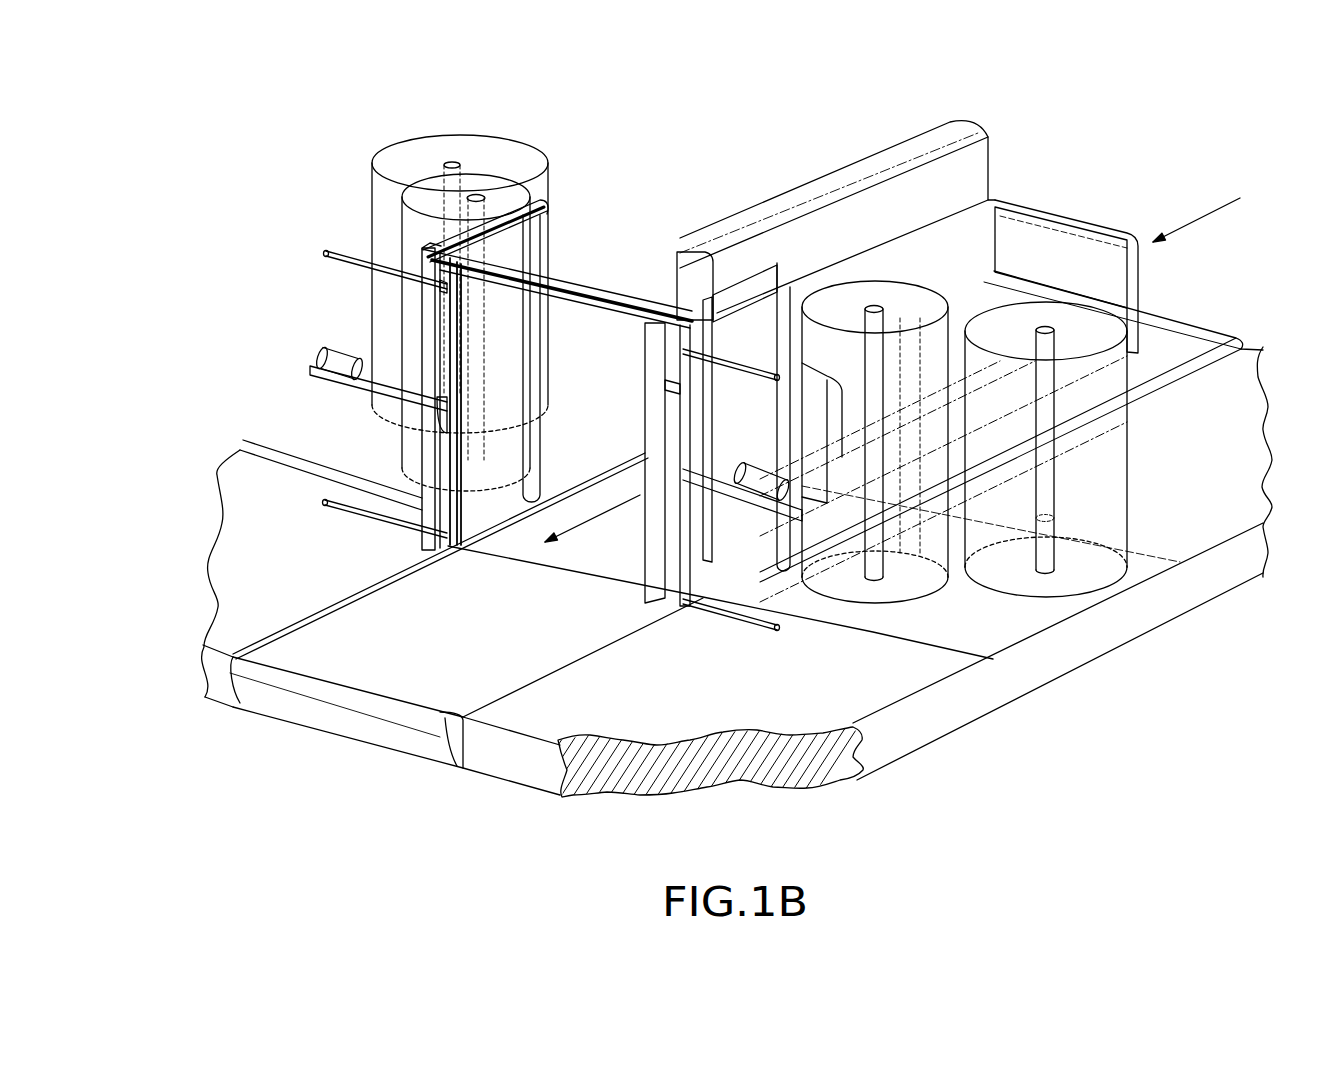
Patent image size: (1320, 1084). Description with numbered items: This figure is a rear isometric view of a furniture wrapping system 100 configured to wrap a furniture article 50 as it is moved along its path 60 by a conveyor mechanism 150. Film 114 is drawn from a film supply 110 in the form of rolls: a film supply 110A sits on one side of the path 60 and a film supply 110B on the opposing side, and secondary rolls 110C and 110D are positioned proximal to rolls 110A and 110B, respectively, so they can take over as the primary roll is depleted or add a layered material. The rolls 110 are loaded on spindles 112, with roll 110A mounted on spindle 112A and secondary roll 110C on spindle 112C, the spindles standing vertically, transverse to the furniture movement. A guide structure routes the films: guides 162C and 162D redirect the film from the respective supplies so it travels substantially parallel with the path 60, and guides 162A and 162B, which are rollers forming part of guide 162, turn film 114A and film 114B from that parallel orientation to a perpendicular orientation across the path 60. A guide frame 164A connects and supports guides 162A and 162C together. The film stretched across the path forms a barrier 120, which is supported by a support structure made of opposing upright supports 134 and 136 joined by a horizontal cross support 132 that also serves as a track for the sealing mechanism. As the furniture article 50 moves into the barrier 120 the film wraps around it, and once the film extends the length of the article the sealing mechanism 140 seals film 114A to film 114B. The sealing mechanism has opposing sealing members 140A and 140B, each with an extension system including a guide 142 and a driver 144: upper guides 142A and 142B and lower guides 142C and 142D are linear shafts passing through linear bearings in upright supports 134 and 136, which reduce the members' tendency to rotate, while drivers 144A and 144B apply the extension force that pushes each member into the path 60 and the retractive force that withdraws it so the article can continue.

The furniture article 50 is at (1093, 263).
The path 60 is at (600, 513).
The furniture wrapping system 100 is at (997, 765).
The film supply 110 is at (1011, 414).
The film supply 110A is at (873, 358).
The film supply 110B is at (413, 233).
The secondary roll 110C is at (1090, 457).
The secondary roll 110D is at (397, 160).
The spindle 112 is at (993, 524).
The spindle 112A is at (877, 574).
The spindle 112C is at (1047, 556).
The film 114 is at (793, 343).
The film 114A is at (783, 292).
The film 114B is at (502, 252).
The barrier 120 is at (541, 485).
The cross support 132 is at (565, 296).
The upright support 134 is at (677, 386).
The upright support 136 is at (430, 362).
The sealing mechanism 140 is at (460, 369).
The sealing member 140A is at (460, 369).
The sealing member 140B is at (288, 370).
The guide 142 is at (736, 658).
The upper guide 142A is at (725, 614).
The upper guide 142B is at (355, 257).
The lower guide 142C is at (737, 370).
The lower guide 142D is at (372, 517).
The driver 144 is at (776, 572).
The driver 144A is at (750, 493).
The driver 144B is at (318, 363).
The conveyor mechanism 150 is at (357, 644).
The guide 162 is at (345, 401).
The guide 162A is at (703, 347).
The guide 162B is at (462, 307).
The guide 162C is at (760, 338).
The guide 162D is at (530, 246).
The guide frame 164A is at (738, 302).